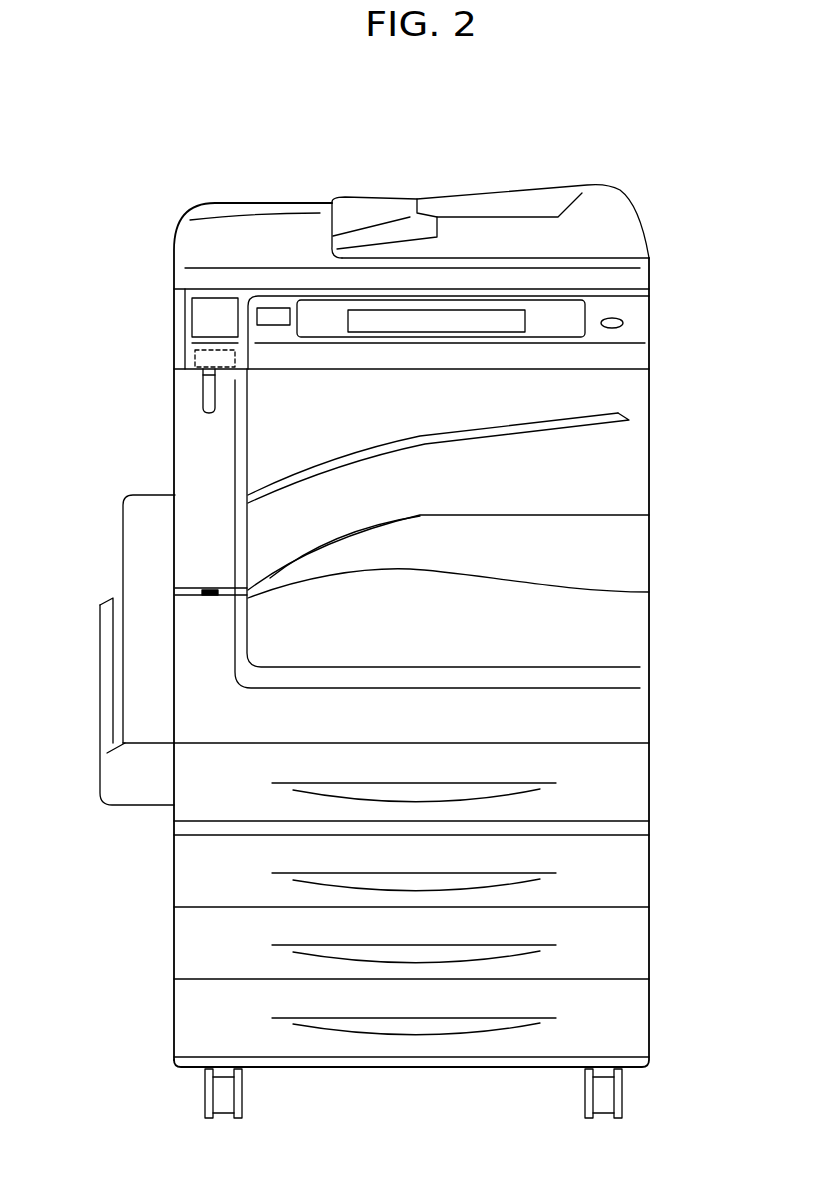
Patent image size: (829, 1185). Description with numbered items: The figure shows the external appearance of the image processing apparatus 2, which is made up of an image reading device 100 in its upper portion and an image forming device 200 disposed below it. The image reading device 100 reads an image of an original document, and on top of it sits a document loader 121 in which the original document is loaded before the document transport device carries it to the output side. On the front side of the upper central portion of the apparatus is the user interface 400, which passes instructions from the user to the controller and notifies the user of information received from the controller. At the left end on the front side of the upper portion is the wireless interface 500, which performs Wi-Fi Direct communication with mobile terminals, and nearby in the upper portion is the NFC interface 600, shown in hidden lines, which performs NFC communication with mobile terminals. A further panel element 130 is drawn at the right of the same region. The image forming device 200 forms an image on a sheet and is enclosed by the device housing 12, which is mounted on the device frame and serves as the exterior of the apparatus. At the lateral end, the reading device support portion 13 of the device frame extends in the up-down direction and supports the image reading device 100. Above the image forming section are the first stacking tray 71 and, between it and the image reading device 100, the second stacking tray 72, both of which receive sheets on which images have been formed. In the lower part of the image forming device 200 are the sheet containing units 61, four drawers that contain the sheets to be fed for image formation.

The image processing apparatus 2 is at (163, 161).
The image reading device 100 is at (357, 213).
The document loader 121 is at (262, 200).
The operation panel 130 is at (451, 351).
The user interface 400 is at (543, 340).
The wireless interface 500 is at (190, 313).
The NFC interface 600 is at (195, 358).
The device housing 12 is at (650, 470).
The reading device support portion 13 is at (248, 407).
The second stacking tray 72 is at (388, 437).
The first stacking tray 71 is at (343, 522).
The image forming device 200 is at (429, 806).
The sheet containing unit 61 is at (650, 781).